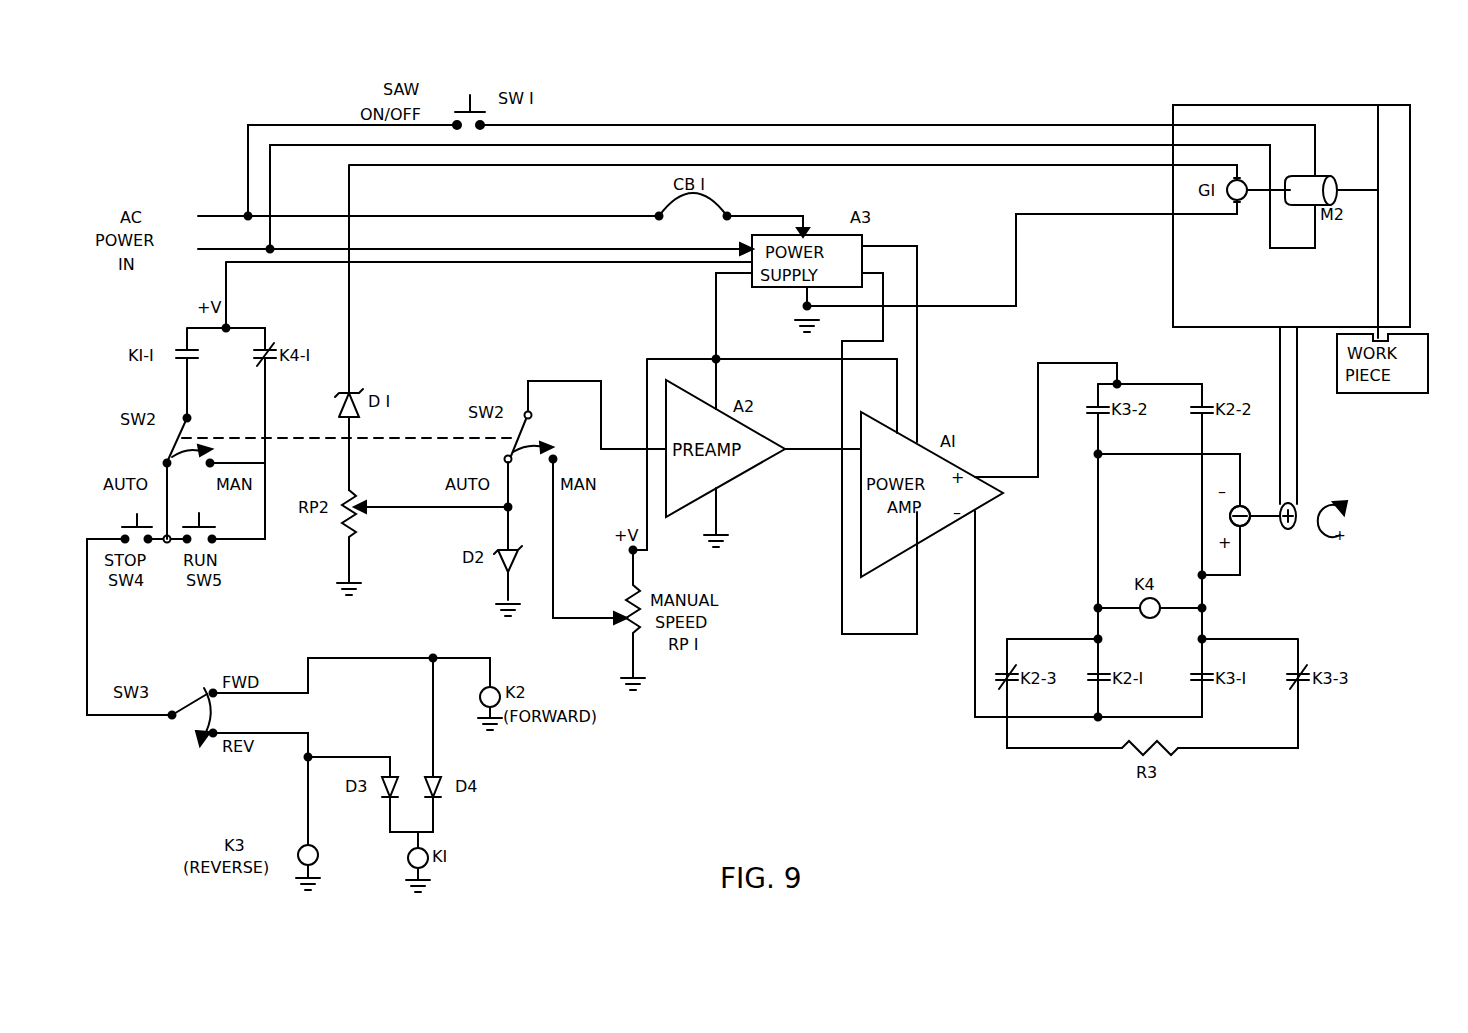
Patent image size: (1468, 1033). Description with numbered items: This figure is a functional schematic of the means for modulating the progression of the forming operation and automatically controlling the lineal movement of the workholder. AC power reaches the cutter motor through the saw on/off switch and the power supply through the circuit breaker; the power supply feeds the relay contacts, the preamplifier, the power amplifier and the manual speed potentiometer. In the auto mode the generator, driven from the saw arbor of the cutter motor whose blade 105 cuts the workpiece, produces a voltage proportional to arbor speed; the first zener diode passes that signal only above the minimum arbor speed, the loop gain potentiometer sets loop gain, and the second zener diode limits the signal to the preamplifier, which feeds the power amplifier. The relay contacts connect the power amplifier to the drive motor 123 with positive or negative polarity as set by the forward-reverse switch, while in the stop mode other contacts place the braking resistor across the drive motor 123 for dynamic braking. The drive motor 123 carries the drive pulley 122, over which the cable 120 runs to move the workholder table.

The saw blade 105 is at (1392, 259).
The cable 120 is at (1308, 414).
The drive pulley 122 is at (1303, 541).
The drive motor 123 is at (1260, 536).